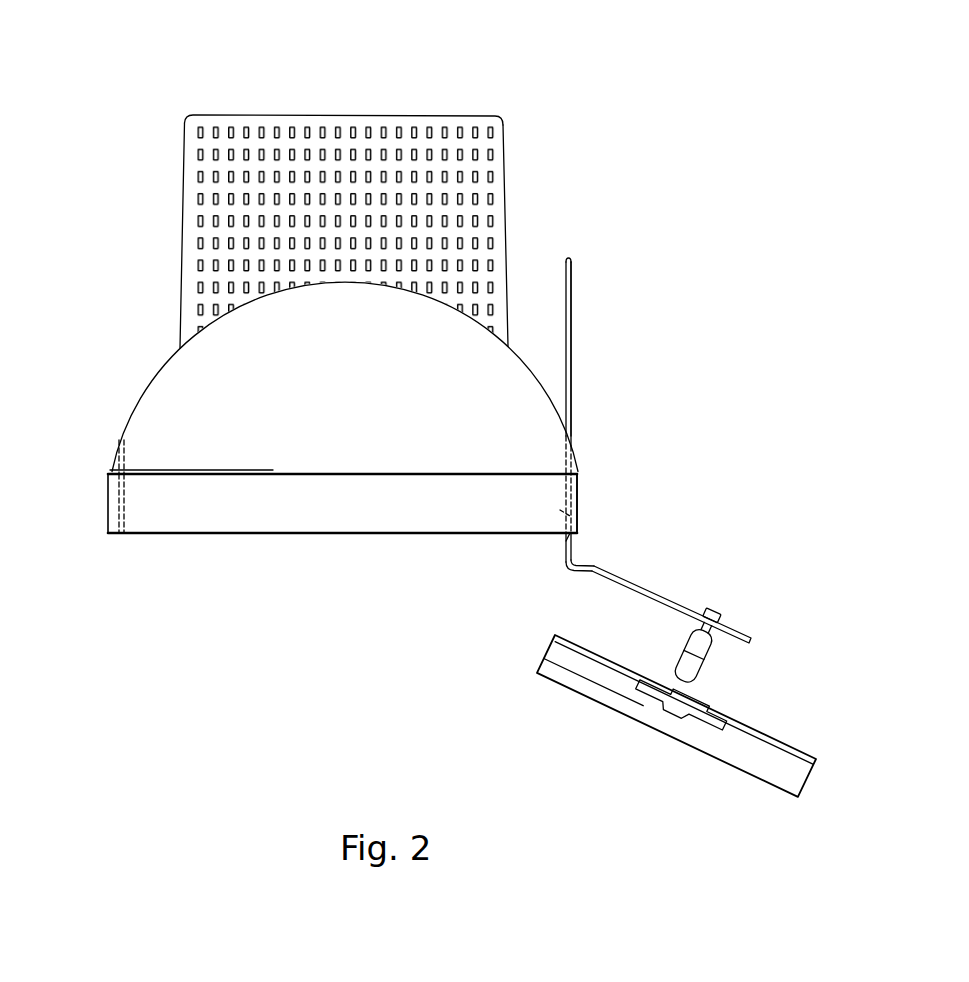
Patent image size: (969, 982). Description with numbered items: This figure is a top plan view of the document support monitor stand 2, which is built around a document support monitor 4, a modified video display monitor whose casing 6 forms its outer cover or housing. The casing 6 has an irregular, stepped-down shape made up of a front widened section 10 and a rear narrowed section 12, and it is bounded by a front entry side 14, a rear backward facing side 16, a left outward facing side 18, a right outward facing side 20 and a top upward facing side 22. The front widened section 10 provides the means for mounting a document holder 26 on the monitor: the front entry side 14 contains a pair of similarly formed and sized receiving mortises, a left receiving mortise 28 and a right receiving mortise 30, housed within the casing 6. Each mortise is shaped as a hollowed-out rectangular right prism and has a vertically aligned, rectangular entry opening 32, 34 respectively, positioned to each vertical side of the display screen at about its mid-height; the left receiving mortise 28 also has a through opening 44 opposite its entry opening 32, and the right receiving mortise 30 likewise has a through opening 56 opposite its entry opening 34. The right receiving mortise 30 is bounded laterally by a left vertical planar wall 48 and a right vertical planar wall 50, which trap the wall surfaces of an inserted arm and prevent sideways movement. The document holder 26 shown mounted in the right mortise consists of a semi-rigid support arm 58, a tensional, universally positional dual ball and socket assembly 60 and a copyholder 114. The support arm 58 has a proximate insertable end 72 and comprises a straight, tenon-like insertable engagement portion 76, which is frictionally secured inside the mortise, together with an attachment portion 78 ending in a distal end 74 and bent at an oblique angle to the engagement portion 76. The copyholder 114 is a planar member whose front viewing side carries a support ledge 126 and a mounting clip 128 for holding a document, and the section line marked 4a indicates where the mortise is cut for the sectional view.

The document support monitor stand 2 is at (662, 43).
The document support monitor 4 is at (522, 99).
The section line 4a is at (158, 627).
The casing 6 is at (124, 374).
The front widened section 10 is at (99, 490).
The rear narrowed section 12 is at (171, 265).
The front entry side 14 is at (290, 533).
The rear backward facing side 16 is at (334, 115).
The left outward facing side 18 is at (183, 182).
The right outward facing side 20 is at (506, 195).
The top upward facing side 22 is at (238, 510).
The document holder 26 is at (736, 656).
The left receiving mortise 28 is at (120, 548).
The right receiving mortise 30 is at (587, 542).
The entry opening 32 is at (110, 535).
The entry opening 34 is at (563, 537).
The through opening 44 is at (117, 441).
The left vertical planar wall 48 is at (563, 513).
The right vertical planar wall 50 is at (580, 512).
The through opening 56 is at (573, 445).
The semi-rigid support arm 58 is at (561, 584).
The dual ball and socket assembly 60 is at (789, 665).
The proximate insertable end 72 is at (568, 258).
The distal end 74 is at (755, 606).
The insertable engagement portion 76 is at (583, 328).
The attachment portion 78 is at (664, 586).
The copyholder 114 is at (824, 787).
The support ledge 126 is at (785, 780).
The mounting clip 128 is at (660, 690).